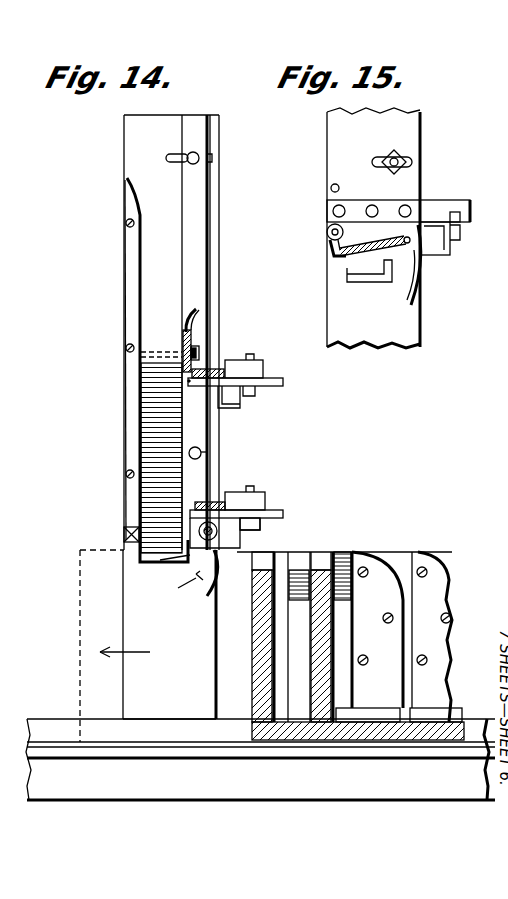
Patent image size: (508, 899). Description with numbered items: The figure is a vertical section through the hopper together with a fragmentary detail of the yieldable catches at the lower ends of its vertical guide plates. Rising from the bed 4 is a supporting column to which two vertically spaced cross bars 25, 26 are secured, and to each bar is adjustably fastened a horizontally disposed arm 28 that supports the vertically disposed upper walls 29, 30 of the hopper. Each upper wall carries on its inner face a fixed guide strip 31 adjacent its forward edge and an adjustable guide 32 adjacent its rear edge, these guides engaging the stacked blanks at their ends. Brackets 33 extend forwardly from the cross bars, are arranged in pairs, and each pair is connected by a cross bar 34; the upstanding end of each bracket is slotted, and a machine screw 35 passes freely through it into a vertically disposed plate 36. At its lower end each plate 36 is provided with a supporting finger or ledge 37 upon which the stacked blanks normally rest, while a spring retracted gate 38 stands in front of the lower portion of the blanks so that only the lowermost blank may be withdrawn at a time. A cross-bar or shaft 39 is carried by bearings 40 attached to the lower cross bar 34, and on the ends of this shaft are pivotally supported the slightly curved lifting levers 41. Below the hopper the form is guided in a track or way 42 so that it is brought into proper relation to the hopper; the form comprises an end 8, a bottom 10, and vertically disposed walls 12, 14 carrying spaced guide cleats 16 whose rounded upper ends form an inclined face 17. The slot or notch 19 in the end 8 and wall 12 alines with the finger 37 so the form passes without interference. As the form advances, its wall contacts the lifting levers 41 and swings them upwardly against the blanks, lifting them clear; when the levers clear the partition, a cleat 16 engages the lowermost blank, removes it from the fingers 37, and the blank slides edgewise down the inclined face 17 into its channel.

In FIG. 14, the bed 4 is at (260, 759).
In FIG. 14, the end of the form 8 is at (76, 624).
In FIG. 14, the bottom of the form 10 is at (310, 722).
In FIG. 14, the vertically disposed wall 12 is at (336, 680).
In FIG. 14, the vertically disposed wall 14 is at (447, 550).
In FIG. 14, the guide member or cleat 16 is at (377, 630).
In FIG. 14, the rounded upper end or inclined face 17 is at (392, 566).
In FIG. 14, the slot or notch 19 is at (280, 560).
In FIG. 14, the cross bar 25 is at (262, 522).
In FIG. 15, the cross bar 25 is at (450, 250).
In FIG. 14, the cross bar 26 is at (242, 400).
In FIG. 14, the horizontally disposed arm 28 is at (235, 495).
In FIG. 15, the horizontally disposed arm 28 is at (470, 210).
In FIG. 14, the upper wall 29 is at (171, 335).
In FIG. 15, the upper wall 30 is at (373, 228).
In FIG. 14, the fixed guide strip 31 is at (129, 303).
In FIG. 14, the adjustable guide 32 is at (190, 262).
In FIG. 14, the bracket 33 is at (283, 381).
In FIG. 14, the cross bar 34 is at (224, 370).
In FIG. 14, the machine screw 35 is at (205, 345).
In FIG. 14, the vertically disposed plate 36 is at (185, 350).
In FIG. 14, the supporting finger or ledge 37 is at (172, 568).
In FIG. 15, the supporting finger or ledge 37 is at (371, 282).
In FIG. 14, the spring retracted gate 38 is at (136, 538).
In FIG. 15, the spring retracted gate 38 is at (330, 245).
In FIG. 14, the cross-bar or shaft 39 is at (218, 540).
In FIG. 14, the bearing 40 is at (255, 540).
In FIG. 14, the lifting lever 41 is at (134, 530).
In FIG. 15, the lifting lever 41 is at (416, 296).
In FIG. 14, the track or way 42 is at (152, 716).